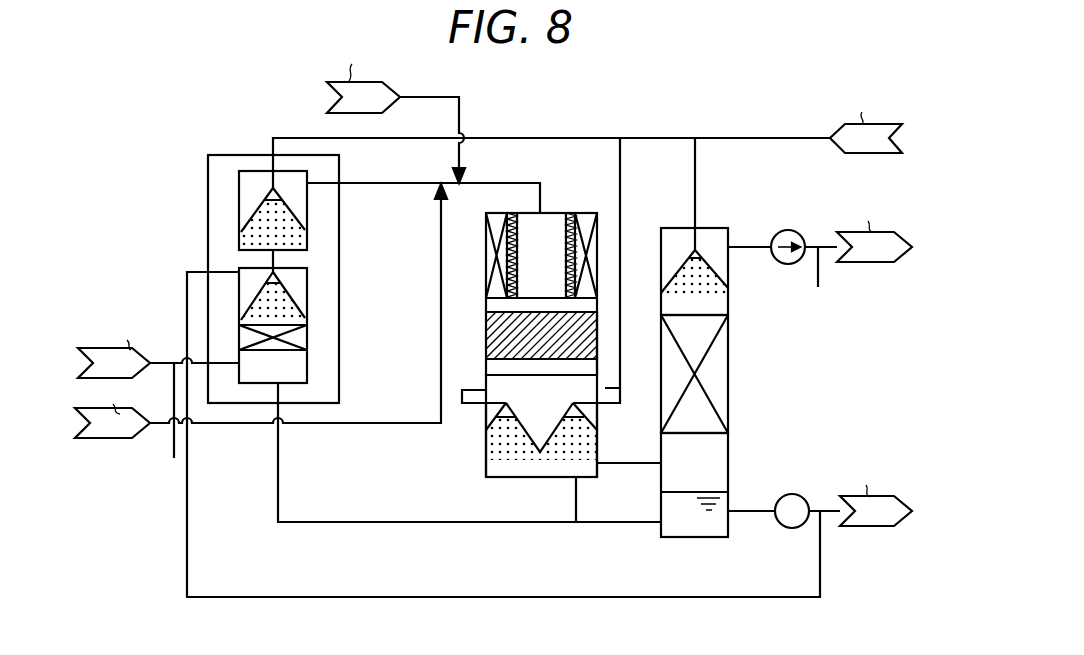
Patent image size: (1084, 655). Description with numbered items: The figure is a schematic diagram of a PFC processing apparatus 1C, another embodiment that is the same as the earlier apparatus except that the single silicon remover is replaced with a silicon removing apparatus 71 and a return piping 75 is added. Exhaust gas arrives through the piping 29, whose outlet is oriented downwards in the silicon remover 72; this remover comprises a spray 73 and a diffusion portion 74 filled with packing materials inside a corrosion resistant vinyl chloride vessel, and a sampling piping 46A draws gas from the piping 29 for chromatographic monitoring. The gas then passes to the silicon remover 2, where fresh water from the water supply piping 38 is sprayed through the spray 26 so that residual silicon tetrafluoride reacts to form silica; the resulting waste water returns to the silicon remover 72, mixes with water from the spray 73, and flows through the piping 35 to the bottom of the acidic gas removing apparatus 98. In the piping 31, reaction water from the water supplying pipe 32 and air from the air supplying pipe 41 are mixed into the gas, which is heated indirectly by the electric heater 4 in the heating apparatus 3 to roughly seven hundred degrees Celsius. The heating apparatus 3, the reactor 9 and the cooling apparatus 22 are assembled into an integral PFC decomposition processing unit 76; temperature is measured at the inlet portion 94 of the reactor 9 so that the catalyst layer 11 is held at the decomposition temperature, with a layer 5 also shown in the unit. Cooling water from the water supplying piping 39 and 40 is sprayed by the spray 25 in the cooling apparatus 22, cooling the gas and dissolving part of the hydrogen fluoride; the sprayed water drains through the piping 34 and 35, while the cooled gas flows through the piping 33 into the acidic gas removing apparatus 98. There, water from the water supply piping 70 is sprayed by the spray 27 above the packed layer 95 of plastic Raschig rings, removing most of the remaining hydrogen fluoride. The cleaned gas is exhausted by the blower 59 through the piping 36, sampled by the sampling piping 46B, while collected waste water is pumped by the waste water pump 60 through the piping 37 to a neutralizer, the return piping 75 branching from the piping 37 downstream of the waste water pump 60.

The PFC processing apparatus 1C is at (169, 511).
The silicon removing apparatus 71 is at (212, 154).
The silicon remover 2 is at (307, 210).
The spray 26 is at (263, 191).
The silicon remover 72 is at (307, 297).
The spray 73 is at (283, 280).
The diffusion portion 74 is at (295, 352).
The piping 29 is at (174, 360).
The sampling piping 46A is at (174, 452).
The air supplying pipe 41 is at (433, 96).
The water supply piping 38 is at (386, 140).
The piping 31 is at (488, 181).
The heating apparatus 3 is at (555, 212).
The catalyst layer 5 is at (486, 257).
The electric heater 4 is at (517, 260).
The PFC decomposition processing unit 76 is at (606, 268).
The inlet portion 94 is at (486, 305).
The catalyst layer 11 is at (486, 333).
The reactor 9 is at (597, 335).
The water supplying piping 40 is at (462, 397).
The spray 25 is at (500, 412).
The cooling apparatus 22 is at (495, 479).
The piping 34 is at (576, 500).
The piping 33 is at (625, 464).
The water supplying pipe 32 is at (396, 428).
The piping 35 is at (405, 524).
The return piping 75 is at (510, 596).
The water supplying piping 39 is at (622, 168).
The water supply piping 70 is at (698, 172).
The spray 27 is at (690, 243).
The piping 36 is at (746, 247).
The blower 59 is at (790, 229).
The sampling piping 46B is at (820, 284).
The packed layer 95 is at (730, 357).
The acidic gas removing apparatus 98 is at (728, 455).
The waste water pump 60 is at (792, 493).
The piping 37 is at (748, 511).